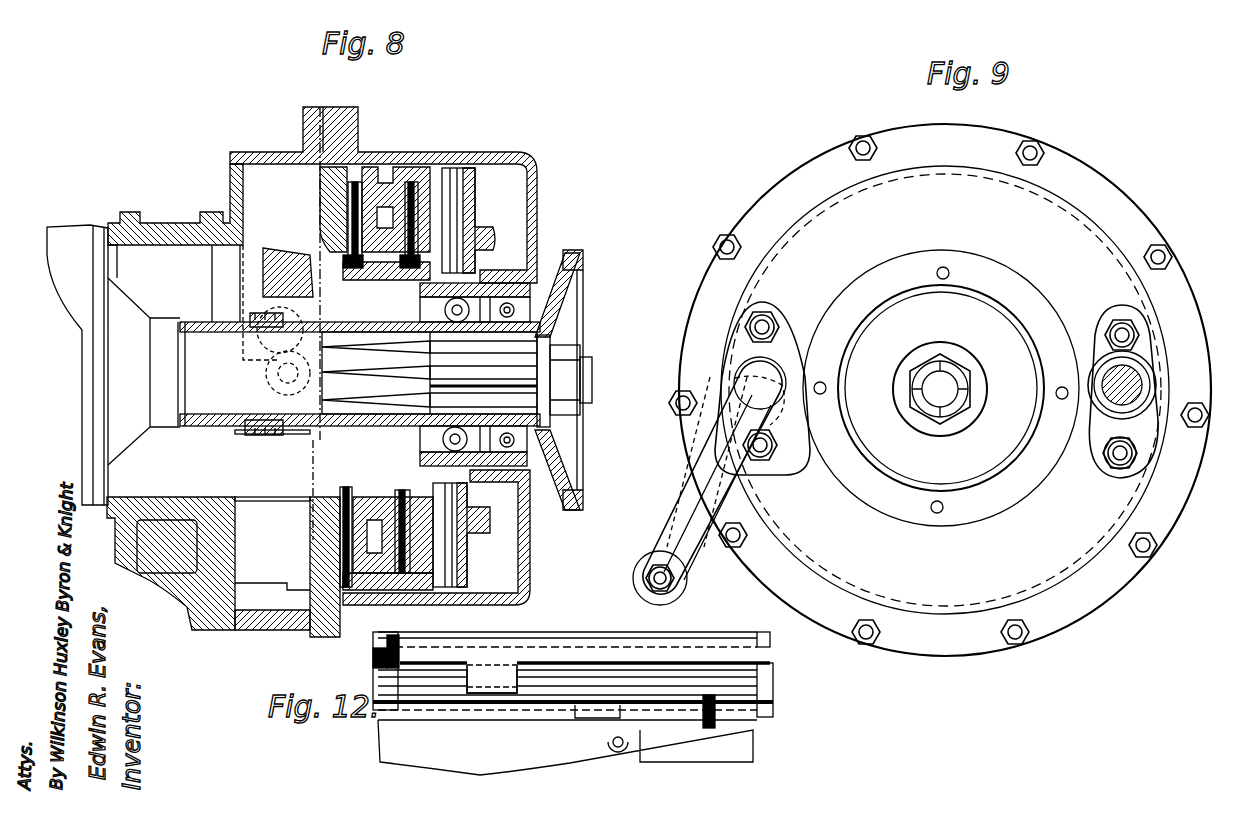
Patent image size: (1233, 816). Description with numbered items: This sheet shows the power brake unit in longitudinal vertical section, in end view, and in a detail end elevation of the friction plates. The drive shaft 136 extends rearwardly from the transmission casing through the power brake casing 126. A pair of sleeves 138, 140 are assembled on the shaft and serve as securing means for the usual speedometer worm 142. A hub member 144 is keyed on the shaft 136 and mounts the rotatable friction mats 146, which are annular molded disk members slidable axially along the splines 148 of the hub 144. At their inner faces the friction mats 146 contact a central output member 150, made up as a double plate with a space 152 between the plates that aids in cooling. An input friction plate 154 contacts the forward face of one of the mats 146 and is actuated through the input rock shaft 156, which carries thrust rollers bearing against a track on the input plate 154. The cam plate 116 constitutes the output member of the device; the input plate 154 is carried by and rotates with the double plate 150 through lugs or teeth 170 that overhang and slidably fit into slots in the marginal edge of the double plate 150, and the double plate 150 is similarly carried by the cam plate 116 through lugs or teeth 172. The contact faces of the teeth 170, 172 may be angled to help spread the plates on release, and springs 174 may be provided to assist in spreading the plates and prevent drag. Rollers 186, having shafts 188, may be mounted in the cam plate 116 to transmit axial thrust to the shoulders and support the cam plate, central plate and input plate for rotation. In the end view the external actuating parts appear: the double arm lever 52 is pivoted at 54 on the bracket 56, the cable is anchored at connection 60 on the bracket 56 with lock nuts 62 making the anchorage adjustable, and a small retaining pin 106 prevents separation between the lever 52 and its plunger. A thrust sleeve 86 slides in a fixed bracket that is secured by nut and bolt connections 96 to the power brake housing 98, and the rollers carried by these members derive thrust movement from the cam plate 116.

In FIG. 9, the double arm lever 52 is at (688, 522).
In FIG. 9, the pivot 54 is at (750, 495).
In FIG. 9, the bracket 56 is at (680, 493).
In FIG. 9, the cable anchorage connection 60 is at (643, 567).
In FIG. 9, the lock nuts 62 is at (687, 592).
In FIG. 9, the thrust sleeve 86 is at (1105, 420).
In FIG. 9, the nut and bolt connections 96 is at (766, 313).
In FIG. 9, the power brake housing 98 is at (1105, 468).
In FIG. 9, the retaining pin 106 is at (735, 378).
In FIG. 8, the cam plate 116 is at (489, 152).
In FIG. 12, the cam plate 116 is at (485, 720).
In FIG. 8, the power brake unit casing 126 is at (511, 152).
In FIG. 9, the power brake unit casing 126 is at (1050, 202).
In FIG. 8, the drive shaft 136 is at (200, 357).
In FIG. 8, the sleeve 138 is at (207, 303).
In FIG. 8, the sleeve 140 is at (302, 252).
In FIG. 8, the speedometer worm 142 is at (263, 437).
In FIG. 8, the hub member 144 is at (347, 450).
In FIG. 8, the friction mats 146 is at (363, 175).
In FIG. 12, the friction mats 146 is at (773, 703).
In FIG. 8, the splines 148 is at (333, 502).
In FIG. 8, the central output member 150 is at (402, 173).
In FIG. 12, the central output member 150 is at (643, 683).
In FIG. 8, the space 152 is at (350, 530).
In FIG. 8, the input friction plate 154 is at (322, 188).
In FIG. 12, the input friction plate 154 is at (563, 643).
In FIG. 8, the input rock shaft 156 is at (280, 252).
In FIG. 12, the lugs or teeth 170 is at (488, 678).
In FIG. 12, the lugs or teeth 172 is at (583, 720).
In FIG. 12, the springs 174 is at (373, 668).
In FIG. 8, the rollers 186 is at (483, 268).
In FIG. 8, the shafts 188 is at (473, 223).